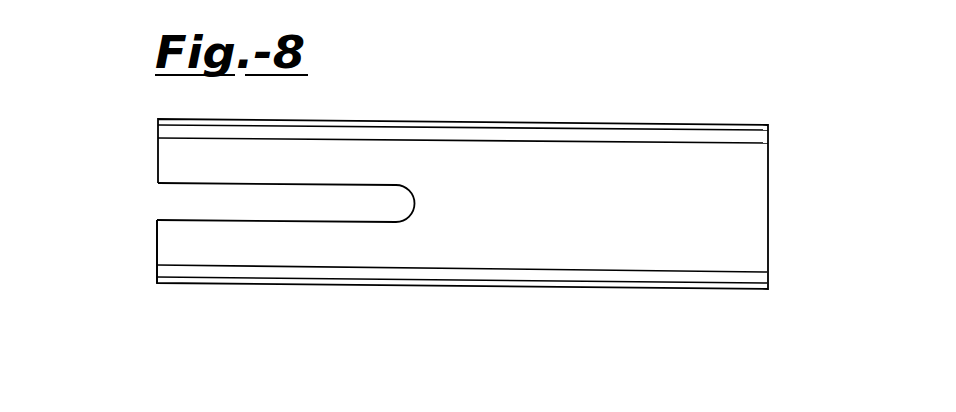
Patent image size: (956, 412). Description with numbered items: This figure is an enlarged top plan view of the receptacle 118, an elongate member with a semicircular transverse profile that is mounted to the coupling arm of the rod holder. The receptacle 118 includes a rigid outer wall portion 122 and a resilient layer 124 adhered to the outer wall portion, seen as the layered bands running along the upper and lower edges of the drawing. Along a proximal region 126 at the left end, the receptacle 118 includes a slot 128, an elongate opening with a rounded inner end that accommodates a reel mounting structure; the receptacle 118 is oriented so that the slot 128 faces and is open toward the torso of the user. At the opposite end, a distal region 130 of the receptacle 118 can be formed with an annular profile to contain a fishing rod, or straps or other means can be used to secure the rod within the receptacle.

The receptacle 118 is at (467, 113).
The rigid outer wall portion 122 is at (560, 123).
The resilient layer 124 is at (590, 141).
The proximal region 126 is at (157, 243).
The slot 128 is at (187, 185).
The distal region 130 is at (722, 252).